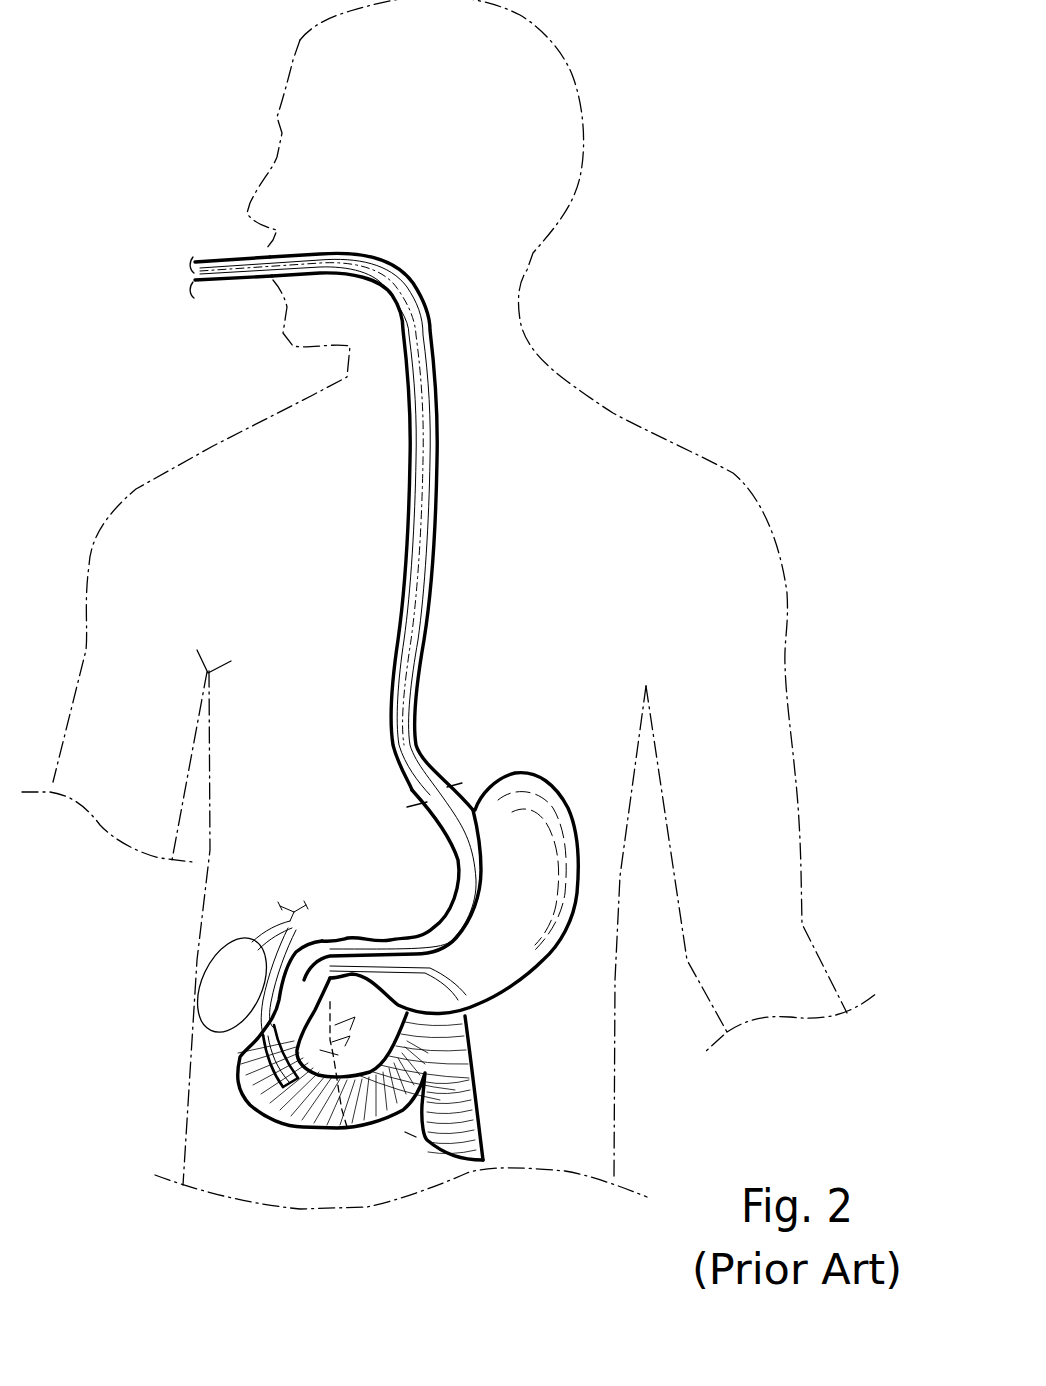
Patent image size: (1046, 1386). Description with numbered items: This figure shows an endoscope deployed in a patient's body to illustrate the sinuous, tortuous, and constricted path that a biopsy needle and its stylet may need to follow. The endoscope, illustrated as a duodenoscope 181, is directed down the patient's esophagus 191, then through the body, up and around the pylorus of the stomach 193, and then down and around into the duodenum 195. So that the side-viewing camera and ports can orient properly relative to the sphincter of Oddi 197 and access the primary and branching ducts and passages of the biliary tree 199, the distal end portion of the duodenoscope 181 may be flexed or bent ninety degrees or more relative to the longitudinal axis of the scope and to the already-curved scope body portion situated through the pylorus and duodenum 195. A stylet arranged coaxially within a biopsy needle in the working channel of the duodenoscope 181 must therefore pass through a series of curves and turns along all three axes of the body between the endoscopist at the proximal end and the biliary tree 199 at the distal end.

The duodenoscope 181 is at (216, 262).
The esophagus 191 is at (434, 386).
The stomach 193 is at (550, 783).
The duodenum 195 is at (260, 1097).
The sphincter of Oddi 197 is at (265, 1100).
The biliary tree 199 is at (347, 1127).